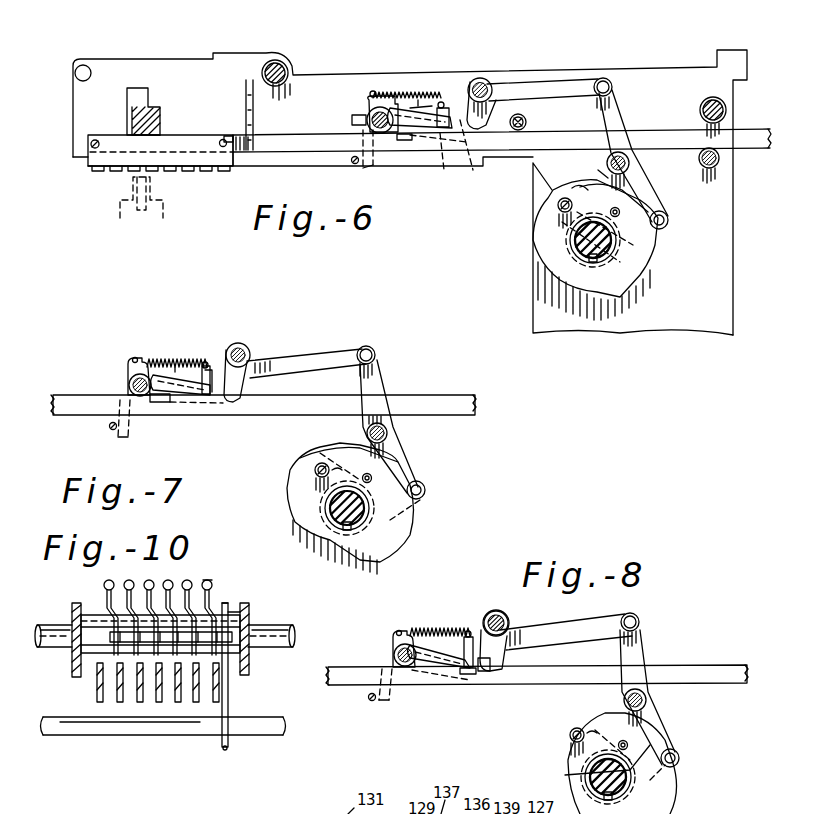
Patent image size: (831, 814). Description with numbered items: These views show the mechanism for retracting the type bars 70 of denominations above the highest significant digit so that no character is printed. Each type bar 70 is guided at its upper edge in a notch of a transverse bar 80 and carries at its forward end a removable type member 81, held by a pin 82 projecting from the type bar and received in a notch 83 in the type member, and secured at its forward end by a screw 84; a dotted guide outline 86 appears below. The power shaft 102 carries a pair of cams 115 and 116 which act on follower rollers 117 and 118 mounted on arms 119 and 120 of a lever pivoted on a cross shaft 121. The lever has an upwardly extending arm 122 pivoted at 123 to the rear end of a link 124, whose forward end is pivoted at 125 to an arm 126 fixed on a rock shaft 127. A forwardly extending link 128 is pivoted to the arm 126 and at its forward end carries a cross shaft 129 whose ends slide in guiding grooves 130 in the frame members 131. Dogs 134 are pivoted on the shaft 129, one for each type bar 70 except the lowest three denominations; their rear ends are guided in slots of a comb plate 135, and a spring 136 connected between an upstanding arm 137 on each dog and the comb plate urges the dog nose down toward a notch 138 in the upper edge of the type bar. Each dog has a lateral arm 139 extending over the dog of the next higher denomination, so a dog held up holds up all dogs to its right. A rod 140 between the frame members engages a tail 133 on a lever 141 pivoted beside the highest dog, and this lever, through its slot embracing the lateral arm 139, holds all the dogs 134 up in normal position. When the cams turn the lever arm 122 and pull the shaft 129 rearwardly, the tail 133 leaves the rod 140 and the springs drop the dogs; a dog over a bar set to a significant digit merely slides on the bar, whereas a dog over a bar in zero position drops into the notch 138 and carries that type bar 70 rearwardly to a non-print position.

In FIG. 6, the type bar 70 is at (545, 150).
In FIG. 7, the type bar 70 is at (442, 402).
In FIG. 10, the type bar 70 is at (117, 686).
In FIG. 8, the type bar 70 is at (672, 668).
In FIG. 6, the transverse bar 80 is at (152, 110).
In FIG. 6, the type member 81 is at (188, 148).
In FIG. 6, the pin 82 is at (224, 139).
In FIG. 6, the notch 83 is at (234, 140).
In FIG. 6, the screw 84 is at (95, 140).
In FIG. 6, the guide 86 is at (120, 203).
In FIG. 6, the power shaft 102 is at (580, 258).
In FIG. 7, the power shaft 102 is at (338, 530).
In FIG. 8, the power shaft 102 is at (608, 777).
In FIG. 6, the cam 115 is at (610, 290).
In FIG. 7, the cam 115 is at (412, 530).
In FIG. 8, the cam 115 is at (670, 781).
In FIG. 6, the cam 116 is at (558, 210).
In FIG. 7, the cam 116 is at (312, 472).
In FIG. 8, the cam 116 is at (568, 733).
In FIG. 6, the follower roller 117 is at (578, 190).
In FIG. 7, the follower roller 117 is at (328, 462).
In FIG. 8, the follower roller 117 is at (588, 730).
In FIG. 6, the follower roller 118 is at (670, 214).
In FIG. 7, the follower roller 118 is at (426, 478).
In FIG. 8, the follower roller 118 is at (670, 758).
In FIG. 6, the arm 119 is at (602, 173).
In FIG. 6, the arm 120 is at (699, 161).
In FIG. 6, the cross shaft 121 is at (630, 161).
In FIG. 7, the cross shaft 121 is at (392, 432).
In FIG. 8, the cross shaft 121 is at (650, 699).
In FIG. 6, the upwardly extending arm 122 is at (613, 110).
In FIG. 7, the upwardly extending arm 122 is at (382, 384).
In FIG. 8, the upwardly extending arm 122 is at (642, 650).
In FIG. 6, the pivot 123 is at (606, 78).
In FIG. 7, the pivot 123 is at (372, 348).
In FIG. 8, the pivot 123 is at (630, 629).
In FIG. 6, the link 124 is at (553, 90).
In FIG. 7, the link 124 is at (323, 360).
In FIG. 8, the link 124 is at (572, 630).
In FIG. 6, the pivot 125 is at (480, 158).
In FIG. 8, the arm 126 is at (505, 656).
In FIG. 6, the rock shaft 127 is at (484, 80).
In FIG. 7, the rock shaft 127 is at (246, 346).
In FIG. 8, the rock shaft 127 is at (506, 616).
In FIG. 6, the link 128 is at (470, 82).
In FIG. 7, the link 128 is at (228, 352).
In FIG. 10, the link 128 is at (72, 630).
In FIG. 8, the link 128 is at (493, 650).
In FIG. 6, the cross shaft 129 is at (390, 100).
In FIG. 7, the cross shaft 129 is at (132, 383).
In FIG. 10, the cross shaft 129 is at (282, 633).
In FIG. 8, the cross shaft 129 is at (398, 650).
In FIG. 6, the guiding groove 130 is at (362, 112).
In FIG. 6, the frame member 131 is at (306, 88).
In FIG. 6, the tail 133 is at (365, 168).
In FIG. 7, the tail 133 is at (122, 438).
In FIG. 10, the tail 133 is at (228, 748).
In FIG. 8, the tail 133 is at (387, 702).
In FIG. 6, the dog 134 is at (430, 125).
In FIG. 7, the dog 134 is at (211, 368).
In FIG. 10, the dog 134 is at (104, 618).
In FIG. 8, the dog 134 is at (432, 666).
In FIG. 6, the comb plate 135 is at (446, 105).
In FIG. 7, the comb plate 135 is at (205, 365).
In FIG. 6, the spring 136 is at (412, 106).
In FIG. 7, the spring 136 is at (165, 356).
In FIG. 10, the spring 136 is at (212, 582).
In FIG. 8, the spring 136 is at (431, 630).
In FIG. 6, the upstanding arm 137 is at (373, 92).
In FIG. 6, the notch 138 is at (404, 142).
In FIG. 7, the notch 138 is at (168, 402).
In FIG. 8, the notch 138 is at (465, 680).
In FIG. 7, the lateral arm 139 is at (205, 362).
In FIG. 10, the lateral arm 139 is at (230, 625).
In FIG. 8, the lateral arm 139 is at (469, 632).
In FIG. 6, the rod 140 is at (352, 164).
In FIG. 7, the rod 140 is at (108, 428).
In FIG. 10, the rod 140 is at (262, 724).
In FIG. 8, the rod 140 is at (369, 701).
In FIG. 6, the lever 141 is at (418, 100).
In FIG. 10, the lever 141 is at (233, 614).